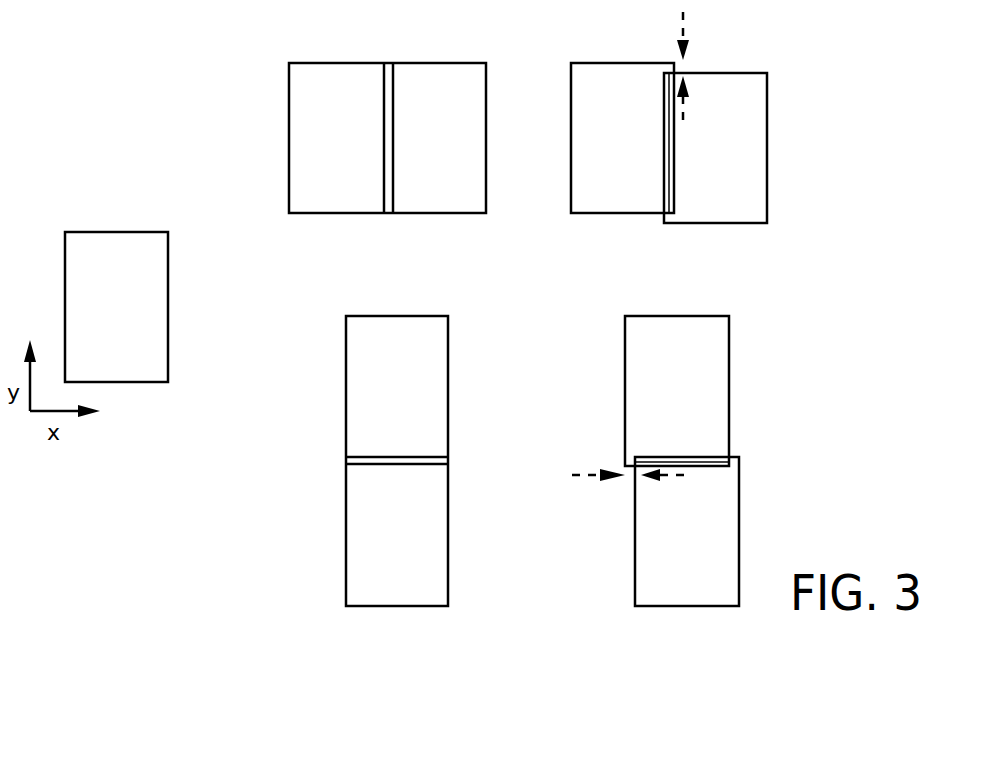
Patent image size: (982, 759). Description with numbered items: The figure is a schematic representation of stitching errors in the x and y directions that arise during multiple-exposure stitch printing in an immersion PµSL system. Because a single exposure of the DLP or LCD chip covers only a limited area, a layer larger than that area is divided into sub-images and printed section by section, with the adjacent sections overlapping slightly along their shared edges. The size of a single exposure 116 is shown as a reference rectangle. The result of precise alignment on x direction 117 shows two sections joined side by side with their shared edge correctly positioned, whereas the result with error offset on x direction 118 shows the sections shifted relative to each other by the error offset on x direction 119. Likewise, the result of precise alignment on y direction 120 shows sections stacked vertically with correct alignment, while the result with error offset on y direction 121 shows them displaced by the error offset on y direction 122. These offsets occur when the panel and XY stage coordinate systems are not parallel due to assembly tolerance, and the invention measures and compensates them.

The size of a single exposure 116 is at (142, 383).
The result of precise alignment on x direction 117 is at (413, 214).
The result with error offset on x direction 118 is at (704, 224).
The error offset on x direction 119 is at (711, 68).
The result of precise alignment on y direction 120 is at (398, 607).
The result with error offset on y direction 121 is at (685, 607).
The error offset on y direction 122 is at (603, 476).